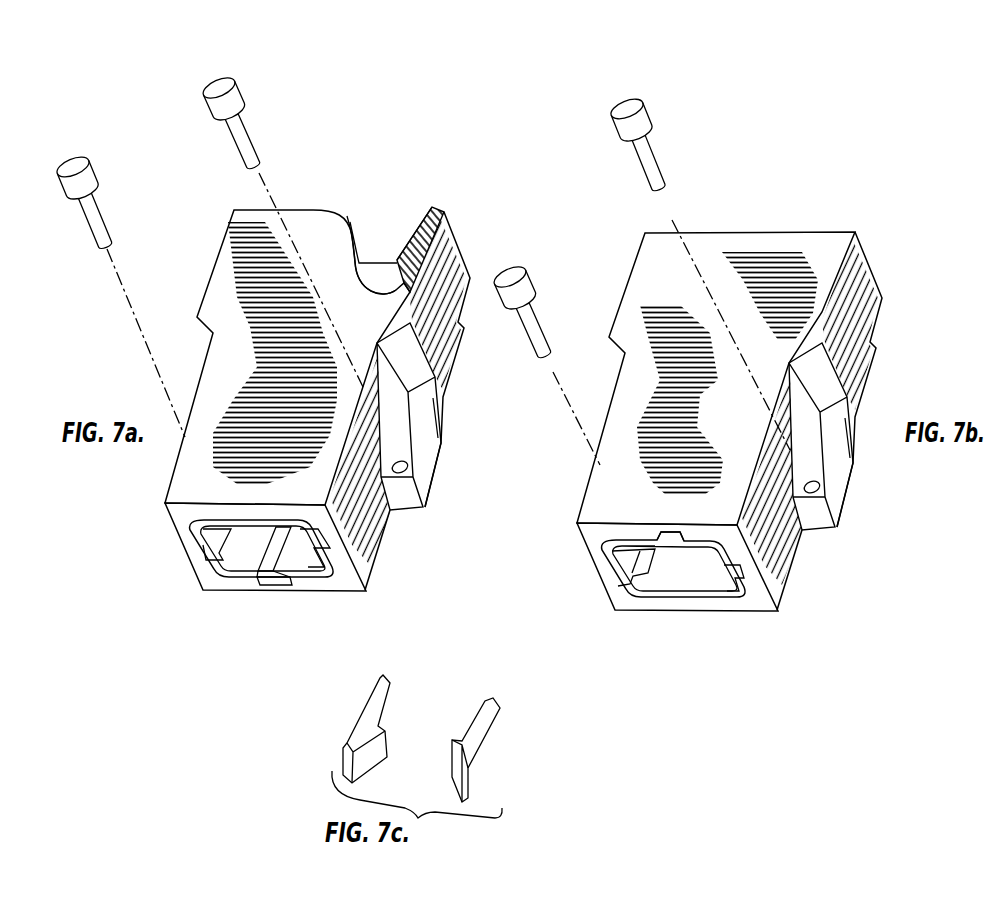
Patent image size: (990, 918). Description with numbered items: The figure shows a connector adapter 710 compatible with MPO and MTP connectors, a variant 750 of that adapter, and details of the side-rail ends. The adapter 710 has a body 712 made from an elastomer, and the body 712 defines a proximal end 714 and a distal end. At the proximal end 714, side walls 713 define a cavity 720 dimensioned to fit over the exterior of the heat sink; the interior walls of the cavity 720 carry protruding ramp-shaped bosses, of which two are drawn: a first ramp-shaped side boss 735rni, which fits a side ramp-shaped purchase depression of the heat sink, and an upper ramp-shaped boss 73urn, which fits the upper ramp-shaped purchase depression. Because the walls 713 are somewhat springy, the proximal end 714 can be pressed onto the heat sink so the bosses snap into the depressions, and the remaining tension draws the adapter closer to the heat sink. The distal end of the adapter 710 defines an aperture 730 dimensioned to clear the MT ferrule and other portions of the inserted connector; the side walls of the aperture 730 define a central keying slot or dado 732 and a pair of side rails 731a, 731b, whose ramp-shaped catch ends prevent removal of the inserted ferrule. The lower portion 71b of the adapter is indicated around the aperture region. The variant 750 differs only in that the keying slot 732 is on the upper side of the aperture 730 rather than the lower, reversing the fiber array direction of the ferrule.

In FIG. 7A, the adapter 710 is at (155, 100).
In FIG. 7A, the body 712 is at (228, 247).
In FIG. 7A, the side walls 713 is at (432, 230).
In FIG. 7A, the proximal end 714 is at (320, 194).
In FIG. 7A, the cavity 720 is at (389, 194).
In FIG. 7A, the upper ramp-shaped boss 73urn is at (360, 246).
In FIG. 7A, the first ramp-shaped side boss 735rni is at (410, 243).
In FIG. 7A, the front portion of housing 71b is at (150, 556).
In FIG. 7A, the aperture 730 is at (235, 567).
In FIG. 7B, the aperture 730 is at (680, 587).
In FIG. 7A, the side rail 731a is at (207, 557).
In FIG. 7B, the side rail 731a is at (623, 580).
In FIG. 7C, the side rail 731a is at (345, 743).
In FIG. 7A, the side rail 731b is at (325, 553).
In FIG. 7B, the side rail 731b is at (740, 573).
In FIG. 7C, the side rail 731b is at (480, 763).
In FIG. 7A, the keying slot 732 is at (288, 586).
In FIG. 7B, the keying slot 732 is at (622, 537).
In FIG. 7B, the variant 750 is at (795, 707).